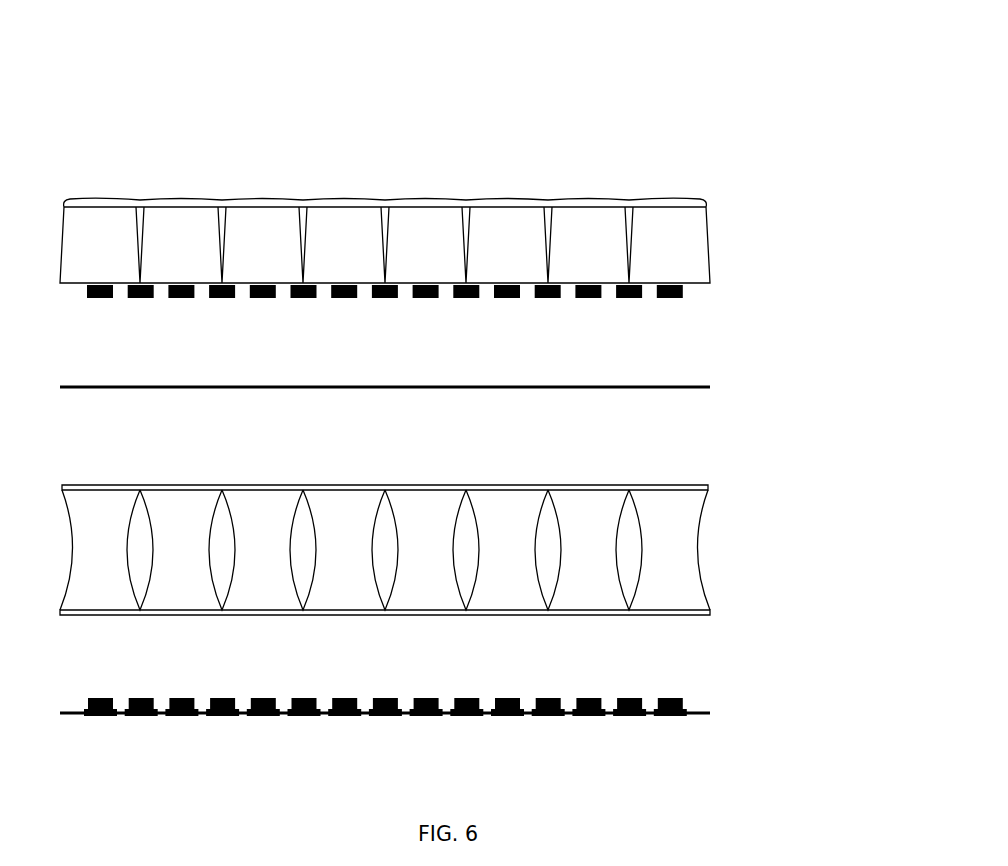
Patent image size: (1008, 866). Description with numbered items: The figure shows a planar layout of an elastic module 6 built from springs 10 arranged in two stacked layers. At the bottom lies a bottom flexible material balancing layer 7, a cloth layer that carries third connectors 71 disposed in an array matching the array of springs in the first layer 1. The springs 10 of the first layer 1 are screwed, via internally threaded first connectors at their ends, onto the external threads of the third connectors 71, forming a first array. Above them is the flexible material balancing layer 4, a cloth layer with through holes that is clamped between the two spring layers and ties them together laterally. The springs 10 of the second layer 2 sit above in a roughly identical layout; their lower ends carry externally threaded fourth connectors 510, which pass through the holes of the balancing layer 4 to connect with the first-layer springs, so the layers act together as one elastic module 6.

The elastic module 6 is at (438, 167).
The second layer 2 is at (675, 242).
The springs 10 is at (105, 235).
The fourth connectors 510 is at (683, 293).
The flexible material balancing layer 4 is at (673, 387).
The first layer 1 is at (668, 552).
The bottom flexible material balancing layer 7 is at (708, 710).
The third connectors 71 is at (627, 698).